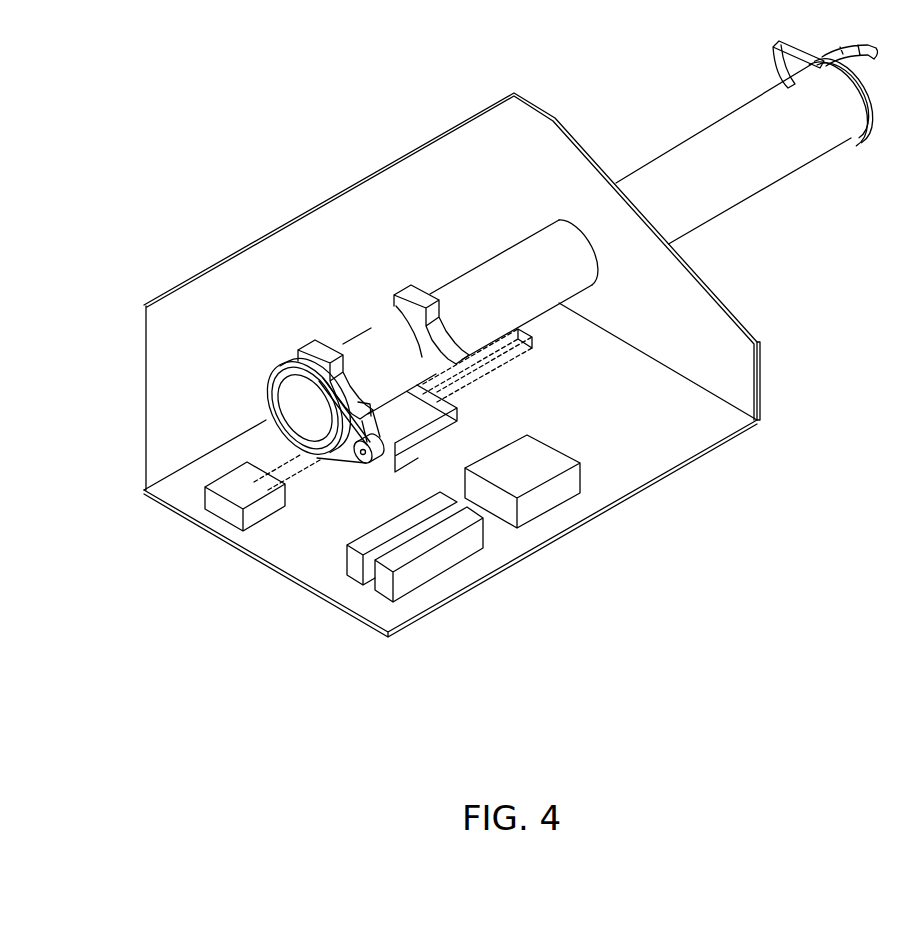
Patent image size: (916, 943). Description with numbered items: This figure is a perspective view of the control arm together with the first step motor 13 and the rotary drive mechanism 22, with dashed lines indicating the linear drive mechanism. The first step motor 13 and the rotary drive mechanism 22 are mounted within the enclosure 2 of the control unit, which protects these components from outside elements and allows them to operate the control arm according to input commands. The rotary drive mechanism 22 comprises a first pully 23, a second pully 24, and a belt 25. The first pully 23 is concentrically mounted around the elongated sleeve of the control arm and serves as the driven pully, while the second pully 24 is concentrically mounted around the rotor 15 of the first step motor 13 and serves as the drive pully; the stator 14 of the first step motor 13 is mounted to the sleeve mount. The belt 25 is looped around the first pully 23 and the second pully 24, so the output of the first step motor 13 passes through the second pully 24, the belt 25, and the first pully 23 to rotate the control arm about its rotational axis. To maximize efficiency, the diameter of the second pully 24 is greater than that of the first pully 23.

The enclosure 2 is at (143, 423).
The first step motor 13 is at (416, 440).
The stator 14 is at (453, 423).
The rotor 15 is at (359, 459).
The rotary drive mechanism 22 is at (279, 373).
The first pully 23 is at (270, 397).
The second pully 24 is at (368, 466).
The belt 25 is at (363, 400).